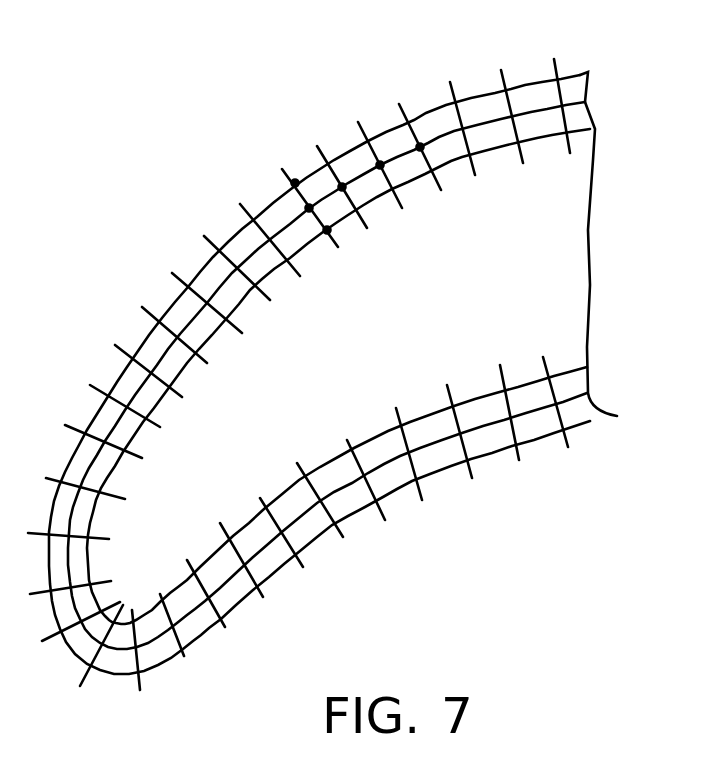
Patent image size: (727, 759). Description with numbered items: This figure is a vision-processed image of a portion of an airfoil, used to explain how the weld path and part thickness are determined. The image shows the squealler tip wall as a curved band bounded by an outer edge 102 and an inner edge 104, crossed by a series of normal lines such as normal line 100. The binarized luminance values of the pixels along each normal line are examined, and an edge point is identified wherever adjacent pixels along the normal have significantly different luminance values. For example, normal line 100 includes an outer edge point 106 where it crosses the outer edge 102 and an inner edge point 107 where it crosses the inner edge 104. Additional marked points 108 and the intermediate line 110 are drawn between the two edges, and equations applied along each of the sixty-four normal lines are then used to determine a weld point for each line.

The normal line 100 is at (333, 242).
The outer edge 102 is at (203, 260).
The inner edge 104 is at (242, 298).
The outer edge point 106 is at (295, 183).
The inner edge point 107 is at (327, 230).
The intermediate intersection points 108 is at (342, 187).
The intermediate layer 110 is at (490, 127).